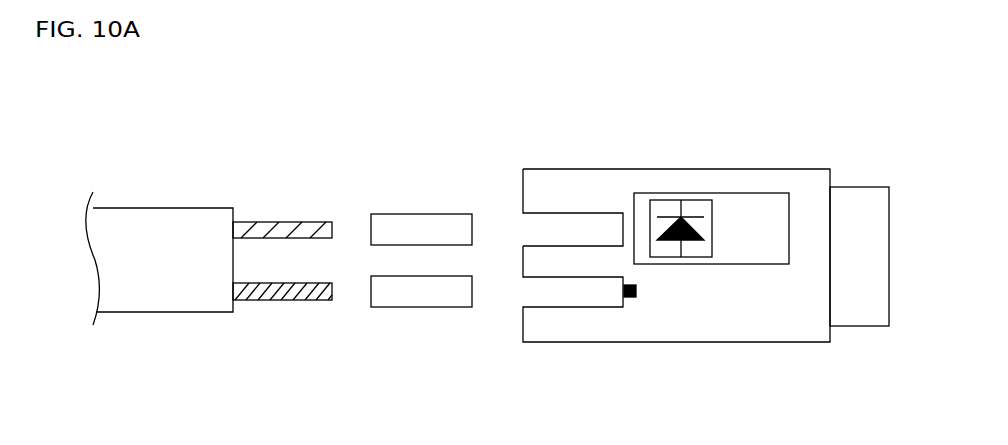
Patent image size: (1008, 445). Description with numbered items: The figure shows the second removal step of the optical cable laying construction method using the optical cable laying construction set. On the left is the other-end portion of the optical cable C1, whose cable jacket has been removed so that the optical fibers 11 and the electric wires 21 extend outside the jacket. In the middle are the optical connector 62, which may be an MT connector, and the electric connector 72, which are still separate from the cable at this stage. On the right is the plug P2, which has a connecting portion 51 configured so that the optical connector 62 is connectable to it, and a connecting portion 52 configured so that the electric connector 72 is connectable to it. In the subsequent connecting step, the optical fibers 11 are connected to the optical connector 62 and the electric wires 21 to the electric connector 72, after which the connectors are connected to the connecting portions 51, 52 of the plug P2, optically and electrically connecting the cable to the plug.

The optical cable C1 is at (171, 191).
The optical fibers 11 is at (272, 222).
The electric wires 21 is at (272, 300).
The optical connector 62 is at (419, 214).
The electric connector 72 is at (422, 307).
The connecting portion 51 is at (622, 230).
The connecting portion 52 is at (624, 291).
The plug P2 is at (706, 243).